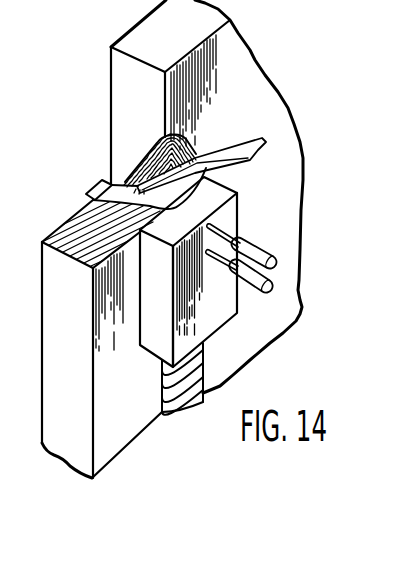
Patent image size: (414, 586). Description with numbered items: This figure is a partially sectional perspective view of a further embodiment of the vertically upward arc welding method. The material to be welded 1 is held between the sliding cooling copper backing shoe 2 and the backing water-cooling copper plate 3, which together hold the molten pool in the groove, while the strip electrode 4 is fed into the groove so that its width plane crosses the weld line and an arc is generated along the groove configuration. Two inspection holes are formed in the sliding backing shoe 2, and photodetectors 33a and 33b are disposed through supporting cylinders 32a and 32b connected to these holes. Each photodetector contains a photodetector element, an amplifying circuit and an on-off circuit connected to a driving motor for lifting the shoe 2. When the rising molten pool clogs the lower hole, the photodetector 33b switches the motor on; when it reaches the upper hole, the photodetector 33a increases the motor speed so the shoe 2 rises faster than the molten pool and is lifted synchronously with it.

The material to be welded 1 is at (118, 68).
The sliding cooling copper backing shoe 2 is at (210, 302).
The backing water-cooling copper plate 3 is at (99, 184).
The strip electrode 4 is at (222, 153).
The supporting cylinder 32a is at (232, 228).
The supporting cylinder 32b is at (236, 268).
The photodetector 33a is at (253, 246).
The photodetector 33b is at (271, 285).